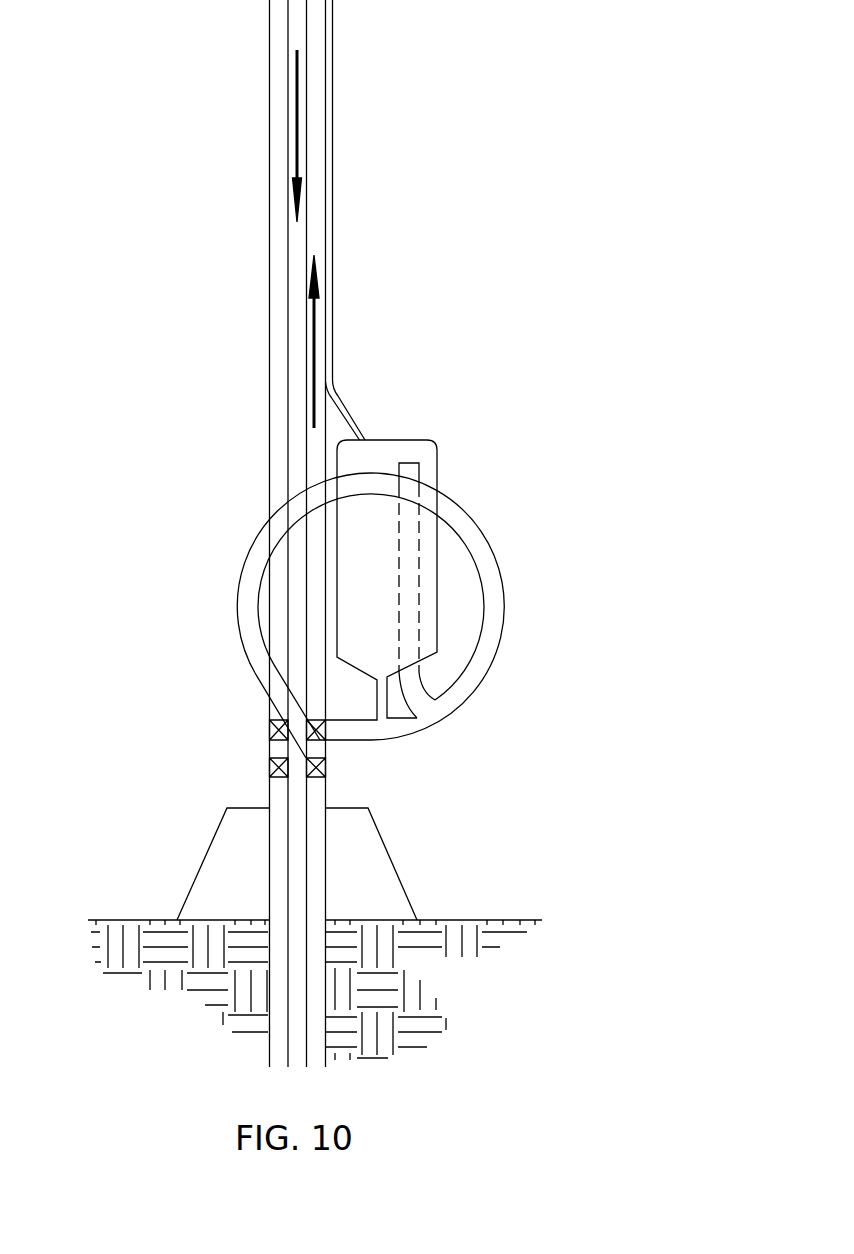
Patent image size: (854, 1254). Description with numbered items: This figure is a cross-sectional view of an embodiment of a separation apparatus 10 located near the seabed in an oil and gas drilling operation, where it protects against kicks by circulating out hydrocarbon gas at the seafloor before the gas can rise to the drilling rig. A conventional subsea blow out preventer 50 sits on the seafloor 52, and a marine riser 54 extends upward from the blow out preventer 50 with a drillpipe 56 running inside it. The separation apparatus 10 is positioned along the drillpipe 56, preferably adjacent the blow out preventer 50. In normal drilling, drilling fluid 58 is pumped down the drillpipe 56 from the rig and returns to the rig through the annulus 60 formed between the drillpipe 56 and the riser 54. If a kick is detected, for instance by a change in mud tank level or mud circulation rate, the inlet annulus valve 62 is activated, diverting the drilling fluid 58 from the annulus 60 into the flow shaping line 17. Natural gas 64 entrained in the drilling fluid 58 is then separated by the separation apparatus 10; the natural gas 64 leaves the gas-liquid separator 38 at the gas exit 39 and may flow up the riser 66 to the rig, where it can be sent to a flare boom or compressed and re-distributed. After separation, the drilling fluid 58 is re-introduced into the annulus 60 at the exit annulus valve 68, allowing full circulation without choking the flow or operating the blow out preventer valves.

The separation apparatus 10 is at (608, 440).
The flow shaping line 17 is at (505, 605).
The gas-liquid separator 38 is at (438, 477).
The gas exit 39 is at (368, 440).
The blow out preventer 50 is at (207, 852).
The seafloor 52 is at (132, 920).
The marine riser 54 is at (268, 365).
The drillpipe 56 is at (297, 288).
The drilling fluid 58 is at (298, 167).
The annulus 60 is at (280, 92).
The inlet annulus valve 62 is at (327, 765).
The natural gas 64 is at (332, 383).
The riser 66 is at (333, 79).
The exit annulus valve 68 is at (268, 730).